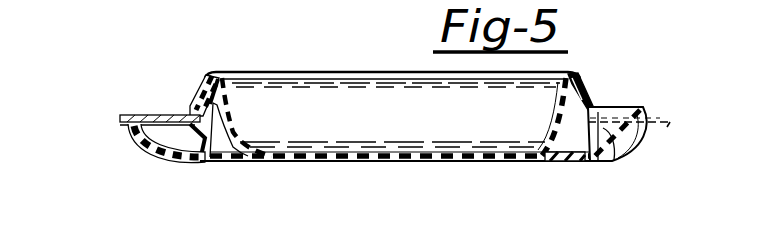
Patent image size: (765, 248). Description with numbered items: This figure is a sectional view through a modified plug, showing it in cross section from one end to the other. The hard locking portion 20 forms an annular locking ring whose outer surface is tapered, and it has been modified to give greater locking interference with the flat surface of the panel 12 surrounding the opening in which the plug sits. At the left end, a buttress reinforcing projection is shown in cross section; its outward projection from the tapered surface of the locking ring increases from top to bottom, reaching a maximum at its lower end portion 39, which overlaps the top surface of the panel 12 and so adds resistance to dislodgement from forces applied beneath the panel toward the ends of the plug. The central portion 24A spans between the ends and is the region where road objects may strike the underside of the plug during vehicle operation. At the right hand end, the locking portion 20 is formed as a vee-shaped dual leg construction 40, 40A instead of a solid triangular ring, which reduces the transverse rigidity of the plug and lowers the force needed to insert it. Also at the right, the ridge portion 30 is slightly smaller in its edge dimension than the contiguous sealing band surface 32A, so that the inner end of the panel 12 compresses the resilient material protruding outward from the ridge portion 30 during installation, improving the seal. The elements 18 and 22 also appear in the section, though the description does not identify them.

The panel 12 is at (118, 118).
The skirt 18 is at (155, 147).
The hard locking portion 20 is at (199, 74).
The bottom wall 22 is at (432, 173).
The central portion 24A is at (334, 153).
The ridge portion 30 is at (603, 118).
The sealing band surface 32A is at (604, 122).
The lower end portion of buttress 39 is at (187, 115).
The vee-shaped dual leg construction 40 is at (565, 92).
The vee-shaped dual leg construction 40A is at (579, 78).